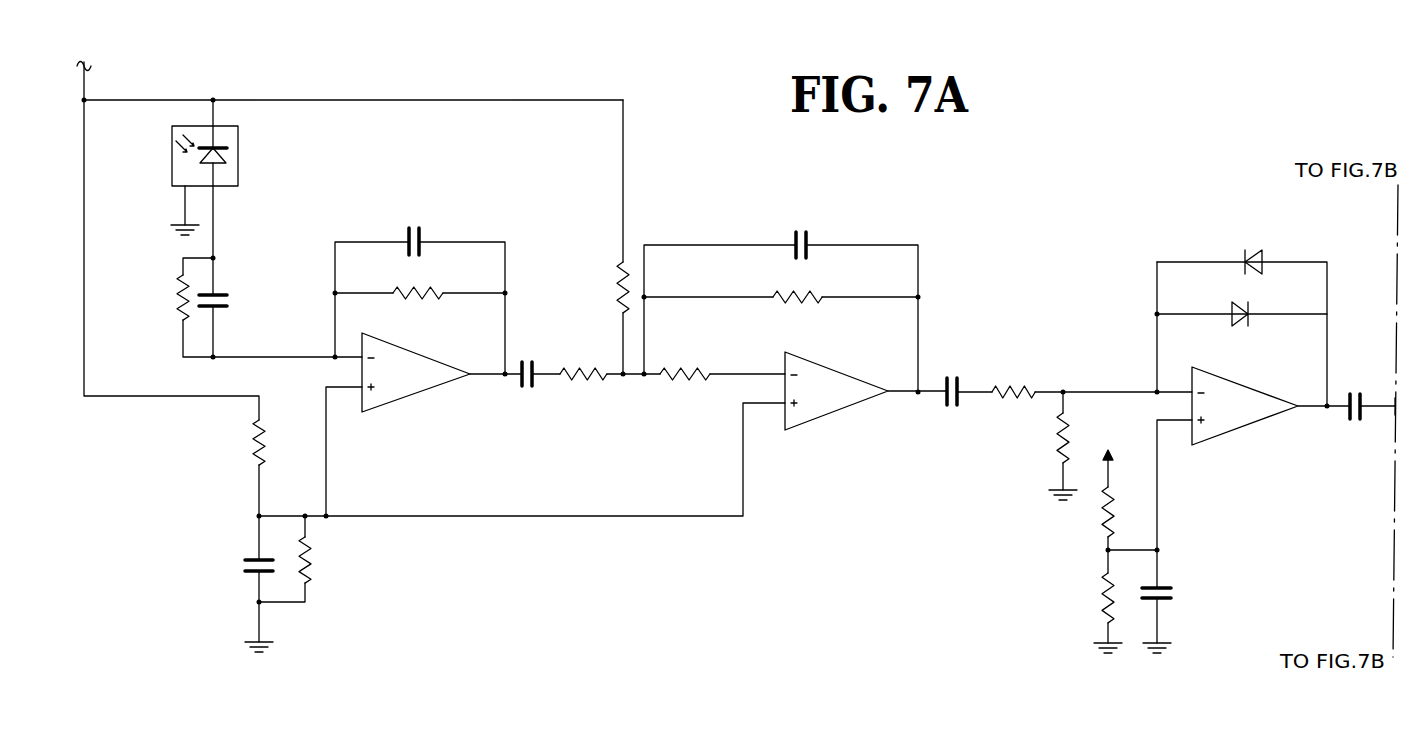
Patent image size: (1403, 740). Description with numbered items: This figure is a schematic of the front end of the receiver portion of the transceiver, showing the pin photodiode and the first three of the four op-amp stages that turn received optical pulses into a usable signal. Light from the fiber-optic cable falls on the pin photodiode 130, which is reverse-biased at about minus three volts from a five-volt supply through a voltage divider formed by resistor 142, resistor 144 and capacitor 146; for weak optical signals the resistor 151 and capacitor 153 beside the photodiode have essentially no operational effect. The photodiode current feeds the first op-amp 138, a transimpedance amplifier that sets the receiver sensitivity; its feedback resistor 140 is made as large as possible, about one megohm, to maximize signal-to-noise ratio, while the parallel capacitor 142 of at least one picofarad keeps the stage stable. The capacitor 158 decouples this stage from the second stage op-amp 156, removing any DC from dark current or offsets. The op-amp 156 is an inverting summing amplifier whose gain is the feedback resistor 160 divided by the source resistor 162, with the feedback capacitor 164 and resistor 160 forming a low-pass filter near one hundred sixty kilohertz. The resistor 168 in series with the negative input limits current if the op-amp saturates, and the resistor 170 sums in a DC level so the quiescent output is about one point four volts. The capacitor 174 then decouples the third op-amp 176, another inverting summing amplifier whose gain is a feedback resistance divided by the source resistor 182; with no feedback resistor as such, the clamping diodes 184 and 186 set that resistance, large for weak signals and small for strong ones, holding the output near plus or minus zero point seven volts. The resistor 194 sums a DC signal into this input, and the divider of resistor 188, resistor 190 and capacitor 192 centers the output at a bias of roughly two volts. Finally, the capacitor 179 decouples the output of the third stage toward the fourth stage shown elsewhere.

The pin photodiode 130 is at (240, 157).
The resistor 151 is at (180, 286).
The capacitor 153 is at (224, 297).
The capacitor 142 is at (421, 229).
The feedback resistor 140 is at (414, 290).
The first op-amp 138 is at (414, 390).
The capacitor 158 is at (528, 390).
The source resistor 162 is at (588, 368).
The resistor 170 is at (618, 278).
The feedback capacitor 164 is at (810, 237).
The feedback resistor 160 is at (804, 300).
The resistor 168 is at (684, 385).
The second stage op-amp 156 is at (832, 398).
The capacitor 174 is at (954, 374).
The source resistor 182 is at (1026, 389).
The resistor 194 is at (1058, 445).
The resistor 188 is at (1103, 518).
The resistor 190 is at (1100, 603).
The capacitor 192 is at (1170, 590).
The third op-amp 176 is at (1240, 418).
The clamping diode 184 is at (1254, 250).
The clamping diode 186 is at (1250, 306).
The capacitor 179 is at (1355, 421).
The resistor 144 is at (312, 560).
The capacitor 146 is at (245, 562).